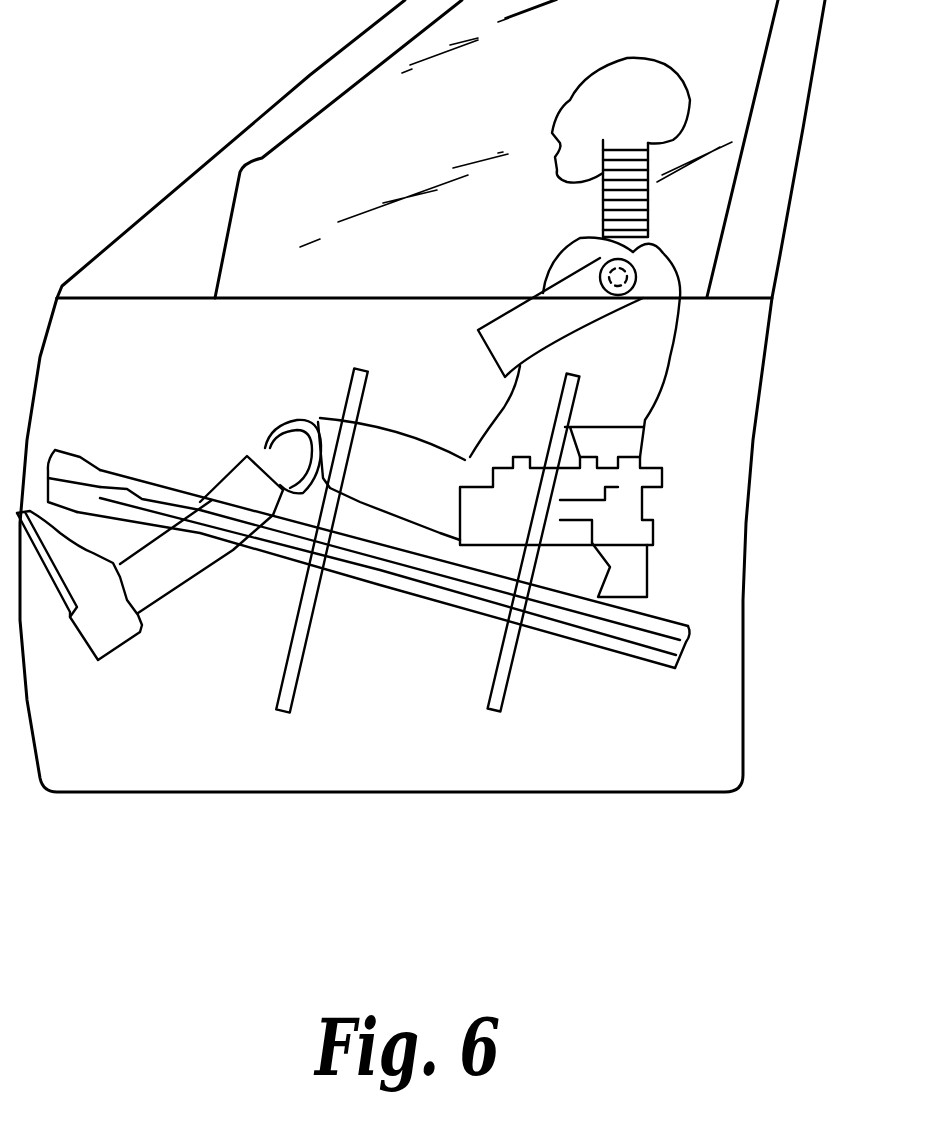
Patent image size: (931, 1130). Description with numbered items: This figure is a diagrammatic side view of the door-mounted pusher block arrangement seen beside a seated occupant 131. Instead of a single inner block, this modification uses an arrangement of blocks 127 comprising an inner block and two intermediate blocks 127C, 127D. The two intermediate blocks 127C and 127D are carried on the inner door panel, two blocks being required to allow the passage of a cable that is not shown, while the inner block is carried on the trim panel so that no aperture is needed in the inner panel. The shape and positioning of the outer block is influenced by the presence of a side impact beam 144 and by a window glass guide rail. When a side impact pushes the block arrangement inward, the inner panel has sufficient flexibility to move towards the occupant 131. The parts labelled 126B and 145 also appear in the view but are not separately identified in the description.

The occupant 131 is at (687, 127).
The arrangement of blocks 127 is at (483, 497).
The intermediate block 127C is at (567, 570).
The intermediate block 127D is at (618, 438).
The door inner panel 126B is at (647, 592).
The side impact beam 144 is at (577, 637).
The guide rod 145 is at (487, 693).